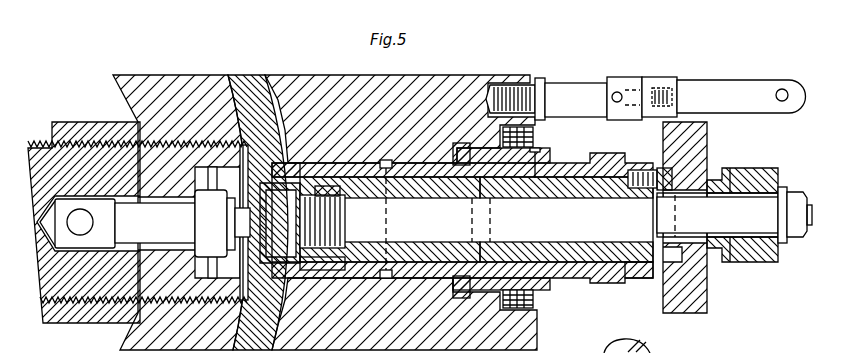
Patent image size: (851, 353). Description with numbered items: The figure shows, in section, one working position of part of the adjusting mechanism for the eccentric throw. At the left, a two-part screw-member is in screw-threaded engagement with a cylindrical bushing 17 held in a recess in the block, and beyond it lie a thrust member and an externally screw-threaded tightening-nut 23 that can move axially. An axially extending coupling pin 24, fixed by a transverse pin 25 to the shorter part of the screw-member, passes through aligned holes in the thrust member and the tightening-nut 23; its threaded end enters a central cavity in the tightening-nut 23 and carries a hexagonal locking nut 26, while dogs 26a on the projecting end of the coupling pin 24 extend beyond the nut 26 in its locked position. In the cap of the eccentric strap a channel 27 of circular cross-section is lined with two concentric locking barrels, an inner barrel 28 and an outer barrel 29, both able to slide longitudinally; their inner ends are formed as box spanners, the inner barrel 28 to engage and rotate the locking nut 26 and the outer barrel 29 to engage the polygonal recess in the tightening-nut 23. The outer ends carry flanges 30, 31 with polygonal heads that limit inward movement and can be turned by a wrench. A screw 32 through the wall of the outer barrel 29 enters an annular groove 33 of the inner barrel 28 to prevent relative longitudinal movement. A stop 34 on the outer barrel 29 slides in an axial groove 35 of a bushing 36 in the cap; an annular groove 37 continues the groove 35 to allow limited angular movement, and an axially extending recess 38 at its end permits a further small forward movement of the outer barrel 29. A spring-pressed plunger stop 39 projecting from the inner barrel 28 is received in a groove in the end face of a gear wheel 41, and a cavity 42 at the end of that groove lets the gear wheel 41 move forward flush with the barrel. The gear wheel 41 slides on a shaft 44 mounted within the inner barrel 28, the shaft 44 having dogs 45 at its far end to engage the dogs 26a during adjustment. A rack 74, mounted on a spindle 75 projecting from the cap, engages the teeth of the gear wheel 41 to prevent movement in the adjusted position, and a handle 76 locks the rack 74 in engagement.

The cylindrical bushing 17 is at (79, 122).
The tightening-nut 23 is at (177, 140).
The coupling pin 24 is at (145, 223).
The transverse pin 25 is at (80, 230).
The hexagonal locking nut 26 is at (246, 153).
The dogs 26a is at (301, 163).
The channel 27 is at (418, 163).
The inner locking barrel 28 is at (338, 270).
The outer locking barrel 29 is at (358, 276).
The flange 30 is at (657, 250).
The flange 31 is at (645, 268).
The screw 32 is at (385, 160).
The annular groove 33 is at (390, 226).
The stop 34 is at (541, 163).
The axial groove 35 is at (498, 160).
The bushing 36 is at (534, 146).
The annular groove 37 is at (488, 228).
The axially extending recess 38 is at (474, 292).
The stop 39 is at (640, 168).
The gear wheel 41 is at (704, 306).
The cavity 42 is at (672, 254).
The shaft 44 is at (566, 219).
The dogs 45 is at (320, 196).
The rack 74 is at (665, 122).
The spindle 75 is at (560, 90).
The handle 76 is at (782, 89).